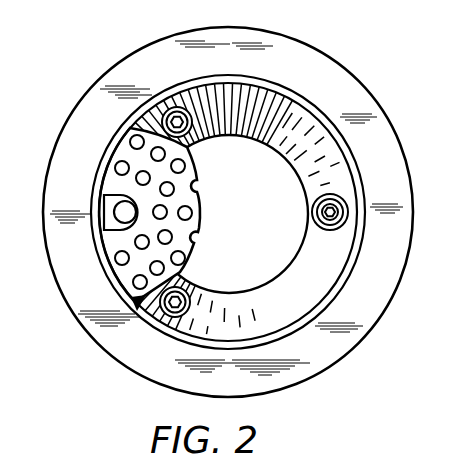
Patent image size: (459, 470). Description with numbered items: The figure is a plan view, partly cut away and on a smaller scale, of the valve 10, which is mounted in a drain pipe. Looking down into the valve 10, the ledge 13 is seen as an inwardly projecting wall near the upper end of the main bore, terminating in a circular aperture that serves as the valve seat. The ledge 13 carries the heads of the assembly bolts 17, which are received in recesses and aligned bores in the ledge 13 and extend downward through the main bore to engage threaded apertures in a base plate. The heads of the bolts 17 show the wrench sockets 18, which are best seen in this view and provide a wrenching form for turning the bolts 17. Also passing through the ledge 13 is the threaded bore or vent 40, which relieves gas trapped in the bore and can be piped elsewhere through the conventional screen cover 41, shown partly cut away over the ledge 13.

The valve 10 is at (64, 97).
The ledge 13 is at (307, 213).
The assembly bolts 17 is at (192, 112).
The wrench sockets 18 is at (328, 216).
The threaded bore or vent 40 is at (100, 203).
The screen cover 41 is at (110, 246).